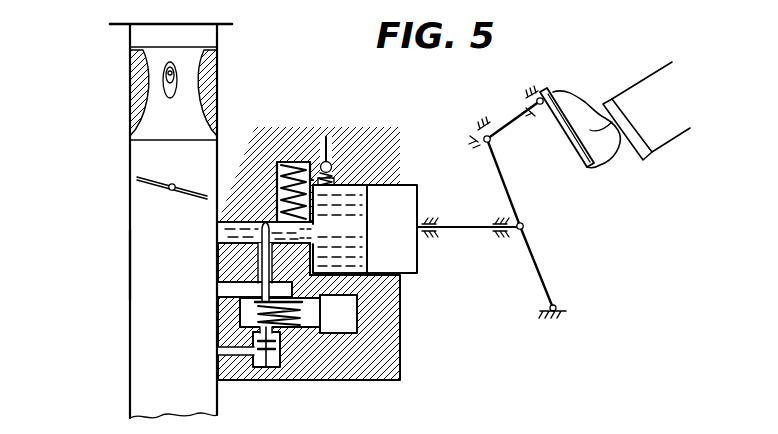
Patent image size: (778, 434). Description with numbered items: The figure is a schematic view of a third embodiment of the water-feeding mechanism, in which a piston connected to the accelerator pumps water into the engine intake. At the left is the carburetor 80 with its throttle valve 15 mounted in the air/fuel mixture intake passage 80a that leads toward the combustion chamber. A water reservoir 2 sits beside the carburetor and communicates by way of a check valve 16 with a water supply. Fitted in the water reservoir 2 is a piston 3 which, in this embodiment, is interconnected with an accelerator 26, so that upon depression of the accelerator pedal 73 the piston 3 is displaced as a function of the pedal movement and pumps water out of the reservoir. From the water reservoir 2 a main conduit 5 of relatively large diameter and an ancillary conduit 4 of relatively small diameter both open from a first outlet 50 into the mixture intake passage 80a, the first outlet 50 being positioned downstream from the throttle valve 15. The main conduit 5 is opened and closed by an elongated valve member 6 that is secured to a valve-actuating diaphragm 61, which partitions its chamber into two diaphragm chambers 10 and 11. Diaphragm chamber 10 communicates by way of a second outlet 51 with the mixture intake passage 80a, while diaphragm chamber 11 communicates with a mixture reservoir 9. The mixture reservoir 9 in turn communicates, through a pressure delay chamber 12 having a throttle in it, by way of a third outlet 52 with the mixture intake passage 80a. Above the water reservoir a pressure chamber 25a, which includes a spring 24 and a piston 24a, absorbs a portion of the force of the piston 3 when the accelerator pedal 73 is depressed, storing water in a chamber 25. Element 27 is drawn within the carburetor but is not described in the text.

The water reservoir 2 is at (350, 185).
The piston 3 is at (407, 192).
The ancillary conduit 4 is at (225, 212).
The main conduit 5 is at (218, 251).
The valve member 6 is at (260, 238).
The mixture reservoir 9 is at (343, 315).
The diaphragm chamber 10 is at (246, 275).
The diaphragm chamber 11 is at (236, 316).
The pressure delay chamber 12 is at (277, 368).
The throttle valve 15 is at (138, 177).
The check valve 16 is at (333, 160).
The spring 24 is at (279, 162).
The piston 24a is at (299, 226).
The chamber 25 is at (270, 190).
The pressure chamber 25a is at (300, 142).
The accelerator 26 is at (512, 203).
The bushing 27 is at (208, 90).
The first outlet 50 is at (220, 232).
The second outlet 51 is at (222, 288).
The third outlet 52 is at (224, 351).
The valve-actuating diaphragm 61 is at (245, 305).
The accelerator pedal 73 is at (563, 132).
The carburetor 80 is at (131, 215).
The air/fuel mixture intake passage 80a is at (140, 254).